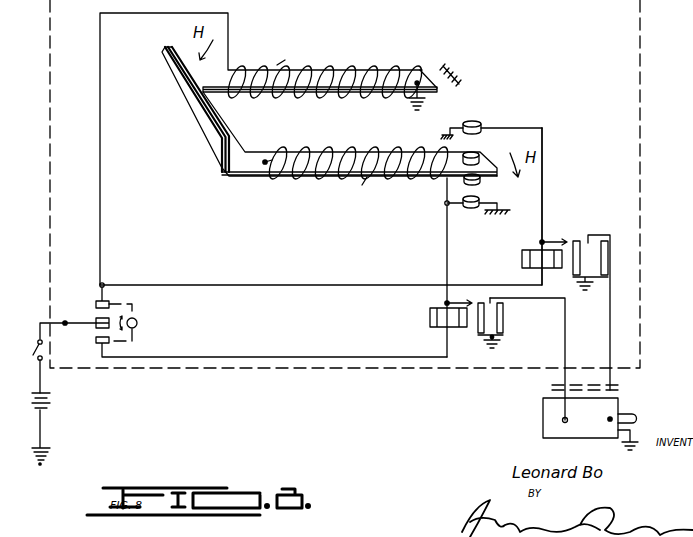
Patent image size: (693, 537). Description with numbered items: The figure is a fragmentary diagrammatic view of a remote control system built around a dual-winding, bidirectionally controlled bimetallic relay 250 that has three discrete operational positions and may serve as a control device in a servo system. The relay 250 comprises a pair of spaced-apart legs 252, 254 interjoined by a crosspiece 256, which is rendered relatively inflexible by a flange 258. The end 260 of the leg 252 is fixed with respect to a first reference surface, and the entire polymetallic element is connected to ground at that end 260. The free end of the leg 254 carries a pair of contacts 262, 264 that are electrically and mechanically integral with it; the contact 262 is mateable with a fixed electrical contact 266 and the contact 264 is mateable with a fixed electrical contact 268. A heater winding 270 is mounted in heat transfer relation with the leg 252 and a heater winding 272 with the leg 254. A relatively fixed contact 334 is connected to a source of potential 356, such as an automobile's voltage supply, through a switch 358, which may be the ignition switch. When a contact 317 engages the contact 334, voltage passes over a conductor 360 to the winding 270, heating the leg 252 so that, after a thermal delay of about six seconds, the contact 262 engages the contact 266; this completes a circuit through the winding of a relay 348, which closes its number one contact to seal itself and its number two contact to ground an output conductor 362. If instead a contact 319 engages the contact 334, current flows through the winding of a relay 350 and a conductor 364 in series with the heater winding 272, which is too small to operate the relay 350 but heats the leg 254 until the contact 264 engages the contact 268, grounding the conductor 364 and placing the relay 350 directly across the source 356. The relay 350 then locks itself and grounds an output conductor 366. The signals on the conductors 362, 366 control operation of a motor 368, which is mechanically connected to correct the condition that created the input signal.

The relay 250 is at (181, 121).
The leg portion 252 is at (315, 72).
The leg portion 254 is at (315, 155).
The crosspiece 256 is at (223, 120).
The flange 258 is at (169, 81).
The end 260 is at (422, 70).
The contact 262 is at (478, 155).
The contact 264 is at (477, 180).
The electrical contact 266 is at (478, 124).
The electrical contact 268 is at (470, 210).
The heater winding 270 is at (277, 65).
The heater winding 272 is at (367, 177).
The contact 317 is at (103, 303).
The contact 319 is at (109, 343).
The contact 334 is at (96, 322).
The relay 348 is at (527, 260).
The relay 350 is at (443, 310).
The source of potential 356 is at (47, 405).
The switch 358 is at (50, 345).
The conductor 360 is at (102, 187).
The conductor 362 is at (612, 313).
The conductor 364 is at (447, 260).
The conductor 366 is at (565, 330).
The motor 368 is at (548, 420).